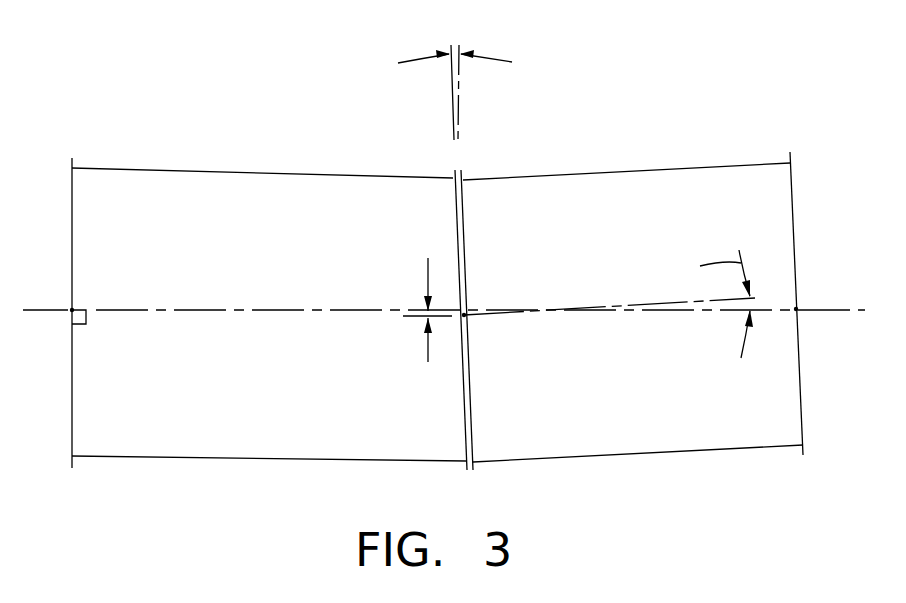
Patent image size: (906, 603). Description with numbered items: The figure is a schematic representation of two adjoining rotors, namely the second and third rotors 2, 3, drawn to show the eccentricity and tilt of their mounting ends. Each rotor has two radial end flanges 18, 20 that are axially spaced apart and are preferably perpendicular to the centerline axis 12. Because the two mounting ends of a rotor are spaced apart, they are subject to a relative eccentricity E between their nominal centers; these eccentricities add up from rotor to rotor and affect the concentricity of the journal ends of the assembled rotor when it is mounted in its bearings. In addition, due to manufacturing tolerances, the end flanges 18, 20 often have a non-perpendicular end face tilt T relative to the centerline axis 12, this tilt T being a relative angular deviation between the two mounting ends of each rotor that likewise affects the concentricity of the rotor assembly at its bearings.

The second rotor 2 is at (220, 175).
The third rotor 3 is at (667, 168).
The centerline axis 12 is at (823, 310).
The radial end flange 18 is at (71, 460).
The radial end flange 20 is at (466, 470).
The end face tilt T is at (414, 63).
The eccentricity E is at (428, 352).